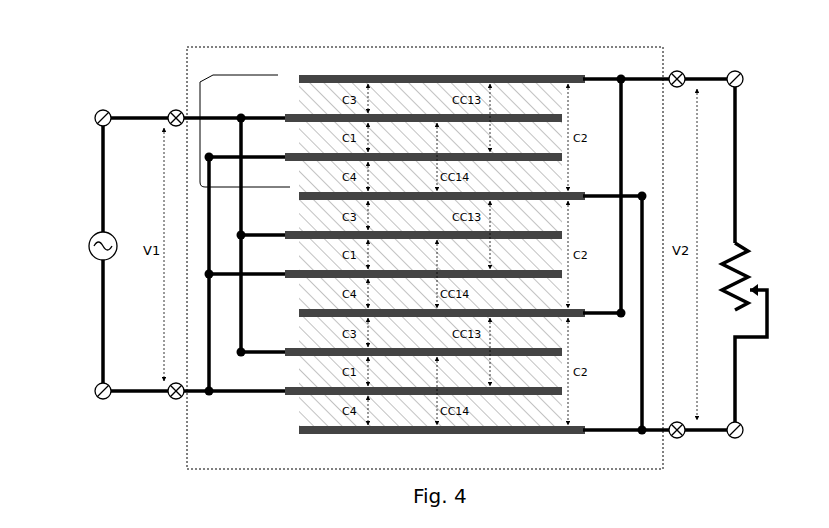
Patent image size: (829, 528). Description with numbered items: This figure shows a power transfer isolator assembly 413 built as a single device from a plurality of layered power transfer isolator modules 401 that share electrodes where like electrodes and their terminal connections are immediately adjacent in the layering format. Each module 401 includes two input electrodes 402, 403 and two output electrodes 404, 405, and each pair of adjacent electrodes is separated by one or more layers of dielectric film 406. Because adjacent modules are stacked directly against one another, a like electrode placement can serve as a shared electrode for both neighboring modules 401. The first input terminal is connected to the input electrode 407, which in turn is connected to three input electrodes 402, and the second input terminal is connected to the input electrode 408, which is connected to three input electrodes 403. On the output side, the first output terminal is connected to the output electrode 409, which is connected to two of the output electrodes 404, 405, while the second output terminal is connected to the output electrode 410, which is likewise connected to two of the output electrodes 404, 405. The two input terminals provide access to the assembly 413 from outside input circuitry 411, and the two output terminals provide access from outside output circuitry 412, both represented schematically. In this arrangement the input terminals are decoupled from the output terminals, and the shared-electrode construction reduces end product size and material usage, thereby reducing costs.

The power transfer isolator module 401 is at (192, 112).
The input electrode 402 is at (333, 112).
The input electrode 403 is at (317, 162).
The output electrode 404 is at (461, 75).
The output electrode 405 is at (522, 197).
The dielectric film 406 is at (550, 93).
The input electrode 407 is at (228, 115).
The input electrode 408 is at (205, 394).
The output electrode 409 is at (645, 78).
The output electrode 410 is at (657, 436).
The input circuitry 411 is at (100, 184).
The output circuitry 412 is at (742, 88).
The power transfer isolator assembly 413 is at (535, 46).